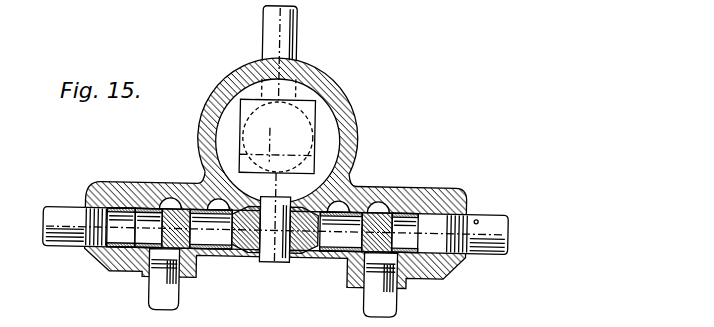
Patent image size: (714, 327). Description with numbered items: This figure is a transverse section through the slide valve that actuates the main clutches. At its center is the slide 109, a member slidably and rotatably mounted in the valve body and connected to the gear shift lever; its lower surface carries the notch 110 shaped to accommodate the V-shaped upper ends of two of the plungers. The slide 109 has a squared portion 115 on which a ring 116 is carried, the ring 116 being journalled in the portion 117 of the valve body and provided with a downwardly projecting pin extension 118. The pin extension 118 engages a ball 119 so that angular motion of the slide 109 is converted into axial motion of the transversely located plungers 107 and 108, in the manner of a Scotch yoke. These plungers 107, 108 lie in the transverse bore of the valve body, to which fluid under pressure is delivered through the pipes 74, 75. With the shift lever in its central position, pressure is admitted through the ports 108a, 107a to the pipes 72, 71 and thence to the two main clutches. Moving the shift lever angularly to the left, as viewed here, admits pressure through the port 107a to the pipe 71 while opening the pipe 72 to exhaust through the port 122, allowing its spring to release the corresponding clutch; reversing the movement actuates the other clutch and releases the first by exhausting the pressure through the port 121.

The pipe 71 is at (159, 297).
The pipe 72 is at (403, 300).
The pipe 74 is at (490, 216).
The pipe 75 is at (60, 217).
The transversely located plunger 107 is at (177, 212).
The port 107a is at (169, 199).
The transversely located plunger 108 is at (370, 196).
The port 108a is at (390, 203).
The slide 109 is at (230, 111).
The notch 110 is at (277, 136).
The squared portion 115 is at (244, 98).
The ring 116 is at (325, 121).
The portion of the valve body 117 is at (317, 89).
The pin extension 118 is at (277, 262).
The ball 119 is at (258, 254).
The port 121 is at (232, 251).
The port 122 is at (313, 251).